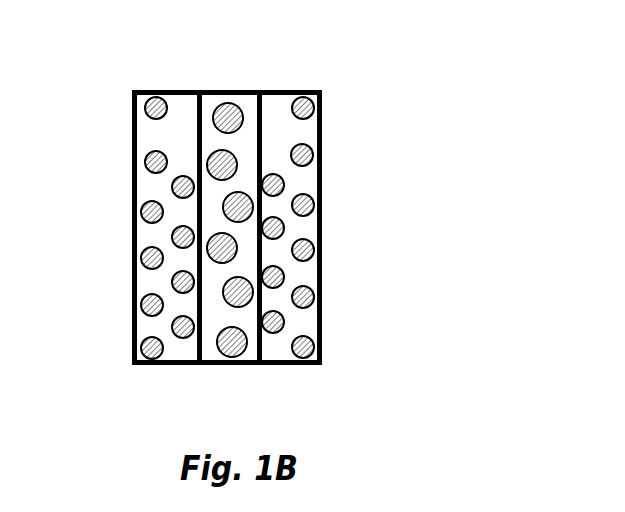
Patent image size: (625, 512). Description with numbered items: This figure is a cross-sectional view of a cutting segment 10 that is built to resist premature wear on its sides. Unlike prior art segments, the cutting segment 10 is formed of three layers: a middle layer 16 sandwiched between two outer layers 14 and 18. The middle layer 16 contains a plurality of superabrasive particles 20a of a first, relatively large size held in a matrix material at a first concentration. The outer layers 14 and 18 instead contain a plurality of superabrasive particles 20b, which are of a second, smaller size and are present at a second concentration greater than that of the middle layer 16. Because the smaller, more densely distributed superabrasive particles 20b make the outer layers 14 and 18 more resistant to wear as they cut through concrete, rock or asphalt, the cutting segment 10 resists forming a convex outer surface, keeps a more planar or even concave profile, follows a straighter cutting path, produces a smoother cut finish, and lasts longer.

The cutting segment 10 is at (455, 174).
The outer layer 14 is at (150, 134).
The middle layer 16 is at (248, 365).
The outer layer 18 is at (305, 273).
The superabrasive particles 20a is at (240, 193).
The superabrasive particles 20b is at (313, 114).